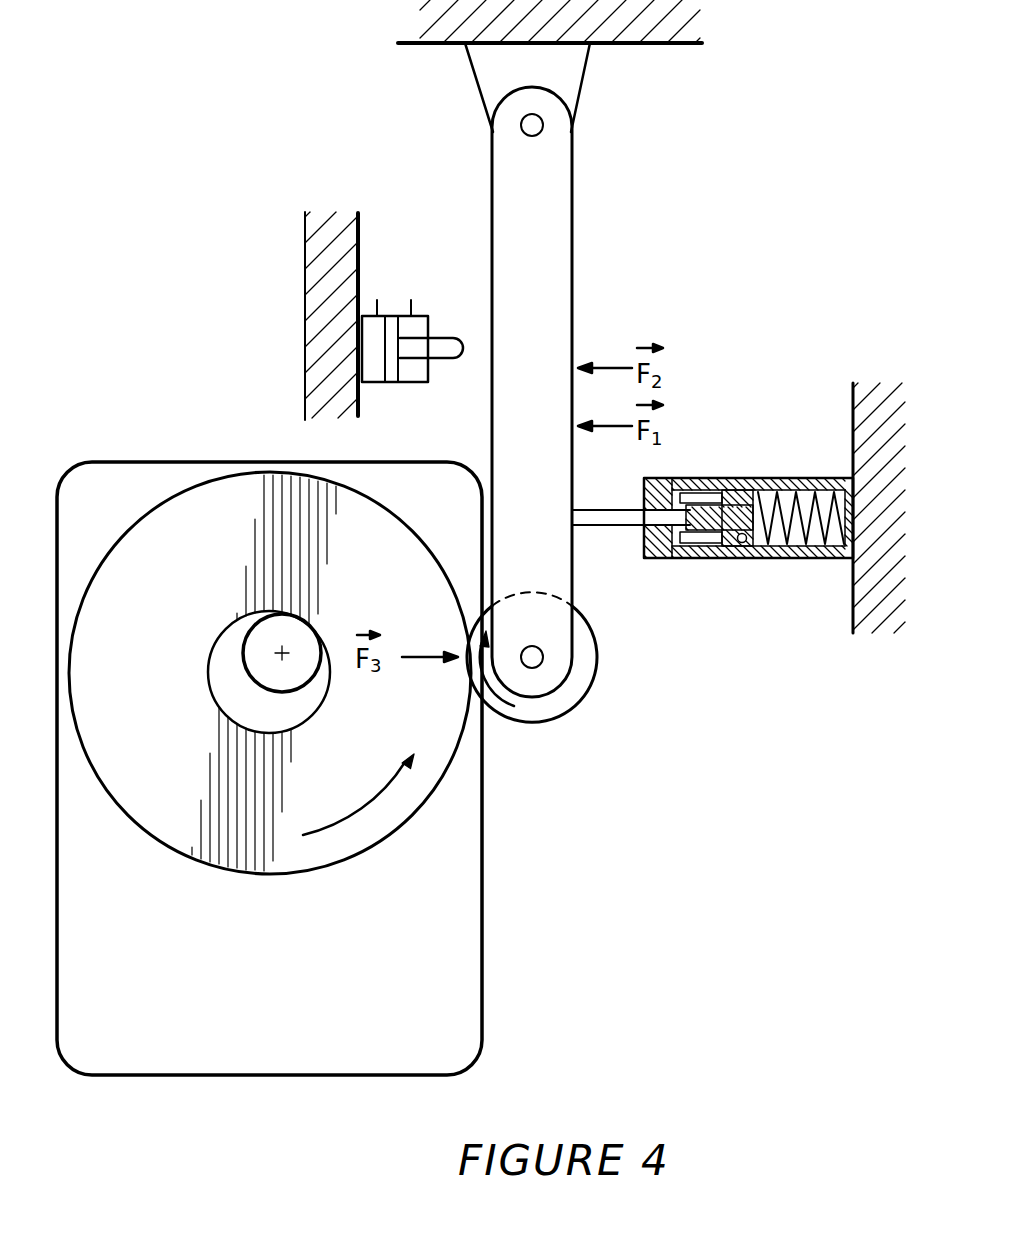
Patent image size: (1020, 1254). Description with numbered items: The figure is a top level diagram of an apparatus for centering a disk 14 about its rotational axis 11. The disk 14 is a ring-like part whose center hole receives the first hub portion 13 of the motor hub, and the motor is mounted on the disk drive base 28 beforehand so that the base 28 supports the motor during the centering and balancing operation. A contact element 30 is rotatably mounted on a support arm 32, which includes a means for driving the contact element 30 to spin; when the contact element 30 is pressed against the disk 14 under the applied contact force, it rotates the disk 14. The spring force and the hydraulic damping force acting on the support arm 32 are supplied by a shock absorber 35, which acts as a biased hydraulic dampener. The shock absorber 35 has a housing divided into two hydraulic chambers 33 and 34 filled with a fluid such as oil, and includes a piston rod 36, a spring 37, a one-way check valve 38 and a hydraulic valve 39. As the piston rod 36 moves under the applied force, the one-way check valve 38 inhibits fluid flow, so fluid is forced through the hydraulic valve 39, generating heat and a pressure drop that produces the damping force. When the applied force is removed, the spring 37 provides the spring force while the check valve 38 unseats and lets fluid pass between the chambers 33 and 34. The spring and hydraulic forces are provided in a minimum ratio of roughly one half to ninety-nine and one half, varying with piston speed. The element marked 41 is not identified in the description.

The rotational axis 11 is at (282, 656).
The first hub portion 13 is at (308, 672).
The disk 14 is at (435, 768).
The disk drive base 28 is at (473, 757).
The contact element 30 is at (583, 703).
The support arm 32 is at (573, 307).
The hydraulic chamber 33 is at (689, 566).
The hydraulic chamber 34 is at (777, 480).
The shock absorber 35 is at (731, 566).
The piston rod 36 is at (590, 520).
The spring 37 is at (845, 490).
The one-way check valve 38 is at (745, 545).
The hydraulic valve 39 is at (745, 493).
The sensor 41 is at (378, 382).